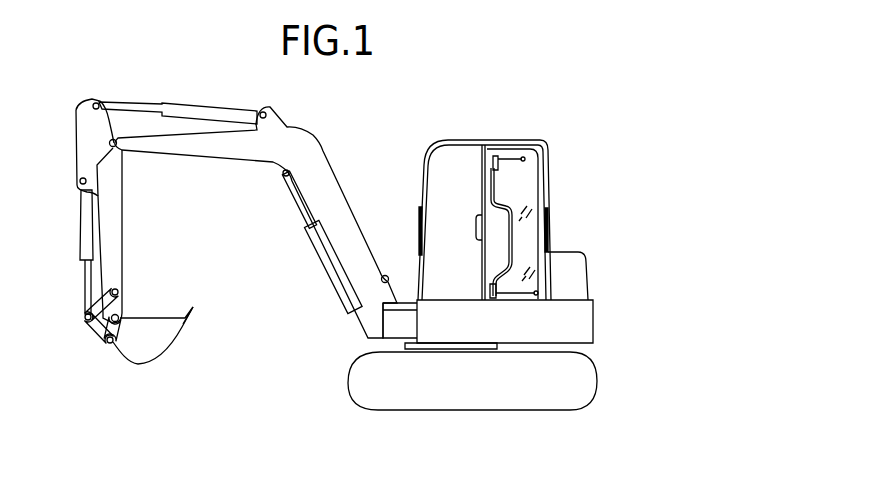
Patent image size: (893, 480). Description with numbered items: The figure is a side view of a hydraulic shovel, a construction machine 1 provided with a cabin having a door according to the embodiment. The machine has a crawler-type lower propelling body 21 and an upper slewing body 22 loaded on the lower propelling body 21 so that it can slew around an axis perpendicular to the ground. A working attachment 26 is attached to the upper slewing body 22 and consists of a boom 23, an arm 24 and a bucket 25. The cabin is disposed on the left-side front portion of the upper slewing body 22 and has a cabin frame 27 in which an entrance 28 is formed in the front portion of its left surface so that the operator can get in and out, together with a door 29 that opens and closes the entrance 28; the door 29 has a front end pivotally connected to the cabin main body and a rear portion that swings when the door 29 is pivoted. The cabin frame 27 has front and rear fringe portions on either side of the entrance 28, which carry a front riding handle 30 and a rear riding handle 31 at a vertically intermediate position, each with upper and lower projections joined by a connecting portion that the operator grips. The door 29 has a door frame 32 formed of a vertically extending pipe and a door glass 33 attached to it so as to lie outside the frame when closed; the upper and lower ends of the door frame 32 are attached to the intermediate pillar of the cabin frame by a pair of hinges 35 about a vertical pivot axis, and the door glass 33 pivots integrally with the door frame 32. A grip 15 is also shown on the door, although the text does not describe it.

The construction machine 1 is at (263, 378).
The grip 15 is at (497, 156).
The lower propelling body 21 is at (474, 411).
The upper slewing body 22 is at (562, 237).
The boom 23 is at (336, 180).
The arm 24 is at (122, 210).
The bucket 25 is at (167, 355).
The working attachment 26 is at (310, 133).
The cabin frame 27 is at (478, 143).
The entrance 28 is at (442, 161).
The door 29 is at (547, 183).
The front riding handle 30 is at (418, 227).
The rear riding handle 31 is at (478, 228).
The door frame 32 is at (490, 190).
The door glass 33 is at (533, 214).
The hinge 35 is at (494, 303).